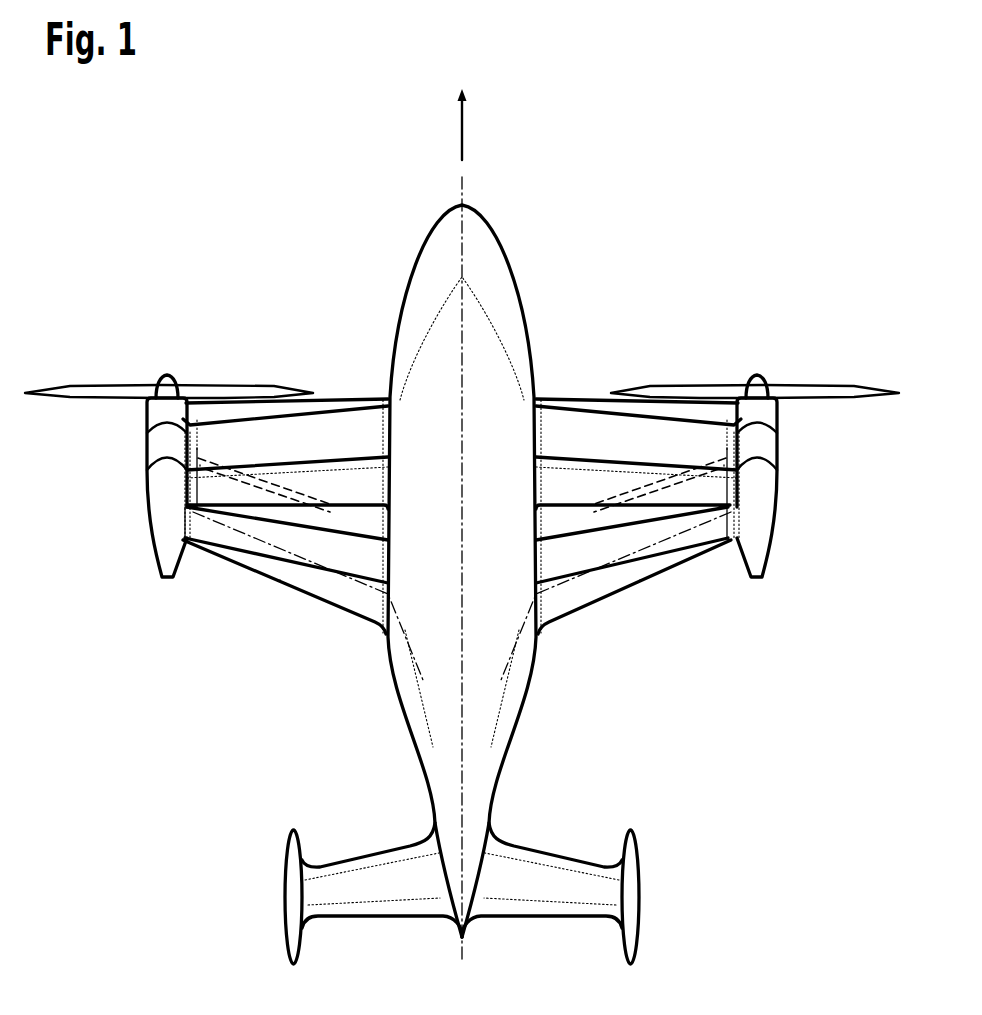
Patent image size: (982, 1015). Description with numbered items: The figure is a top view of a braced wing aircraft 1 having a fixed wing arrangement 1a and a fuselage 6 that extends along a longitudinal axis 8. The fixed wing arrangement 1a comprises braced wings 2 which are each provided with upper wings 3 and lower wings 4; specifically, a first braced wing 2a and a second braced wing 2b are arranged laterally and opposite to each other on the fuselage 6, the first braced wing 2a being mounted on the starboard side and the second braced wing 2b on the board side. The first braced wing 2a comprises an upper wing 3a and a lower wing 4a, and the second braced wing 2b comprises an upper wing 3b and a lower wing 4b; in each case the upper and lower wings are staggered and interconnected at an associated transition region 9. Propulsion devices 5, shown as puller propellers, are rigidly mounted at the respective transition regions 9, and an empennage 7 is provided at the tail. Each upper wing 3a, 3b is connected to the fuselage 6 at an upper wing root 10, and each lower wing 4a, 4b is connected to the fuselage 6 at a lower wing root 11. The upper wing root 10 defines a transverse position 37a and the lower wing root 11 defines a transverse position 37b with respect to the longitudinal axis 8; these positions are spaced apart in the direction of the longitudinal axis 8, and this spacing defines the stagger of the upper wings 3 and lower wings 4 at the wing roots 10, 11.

The braced wing aircraft 1 is at (167, 191).
The fixed wing arrangement 1a is at (704, 662).
The braced wings 2 is at (391, 490).
The first braced wing 2a is at (304, 654).
The second braced wing 2b is at (585, 668).
The upper wings 3 is at (513, 400).
The upper wing 3a is at (334, 440).
The upper wing 3b is at (618, 442).
The lower wings 4 is at (472, 599).
The lower wing 4a is at (272, 522).
The lower wing 4b is at (617, 540).
The propulsion devices 5 is at (462, 338).
The fuselage 6 is at (487, 571).
The empennage 7 is at (513, 893).
The longitudinal axis 8 is at (466, 130).
The transition regions 9 is at (421, 487).
The upper wing root 10 is at (462, 351).
The lower wing root 11 is at (458, 621).
The transverse position 37a is at (462, 380).
The transverse position 37b is at (462, 649).